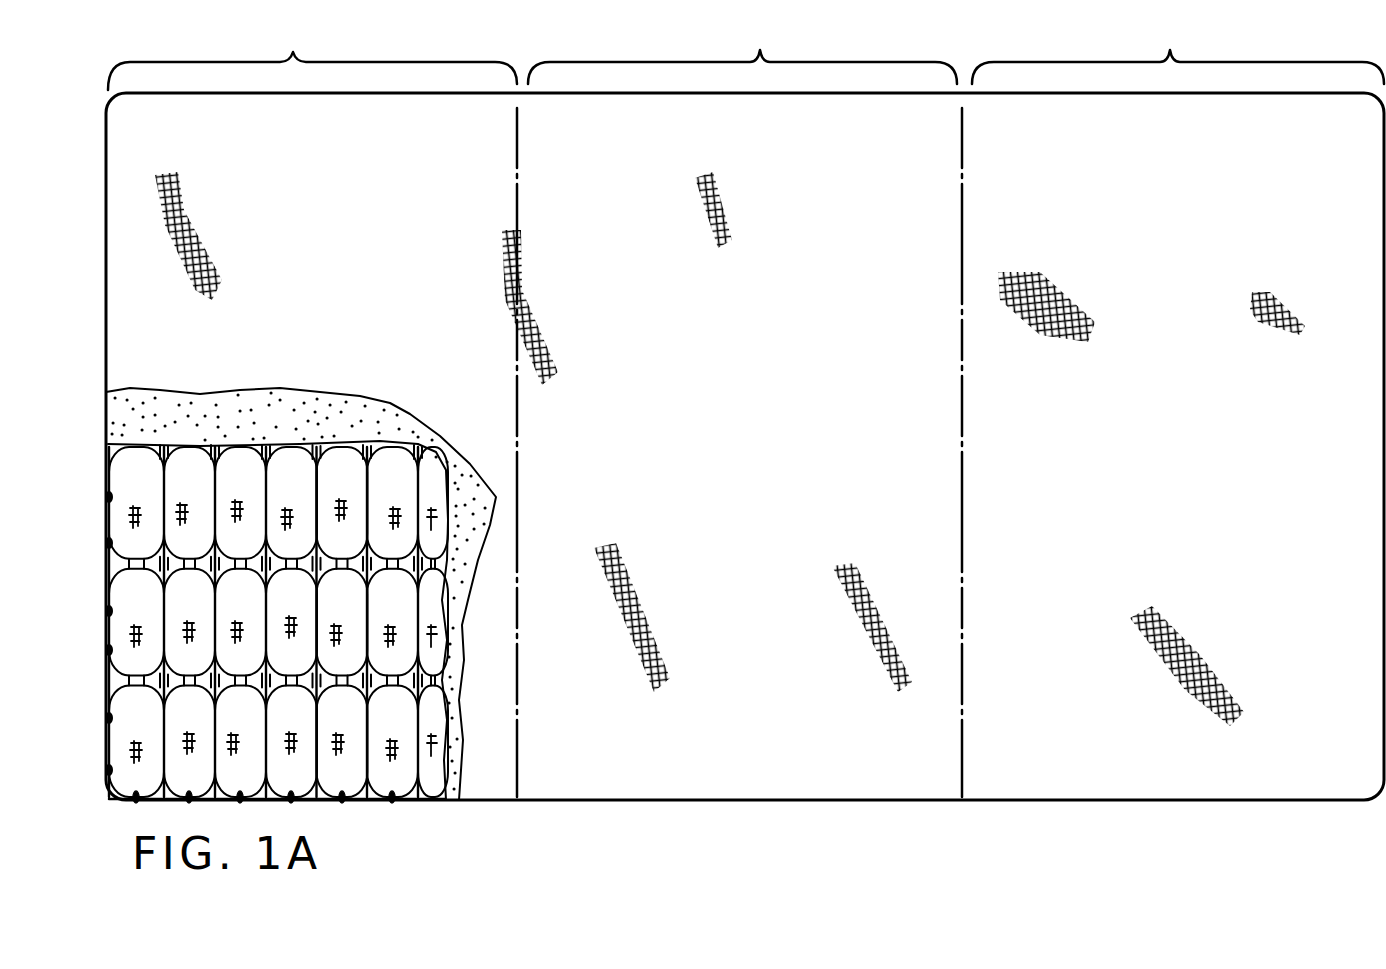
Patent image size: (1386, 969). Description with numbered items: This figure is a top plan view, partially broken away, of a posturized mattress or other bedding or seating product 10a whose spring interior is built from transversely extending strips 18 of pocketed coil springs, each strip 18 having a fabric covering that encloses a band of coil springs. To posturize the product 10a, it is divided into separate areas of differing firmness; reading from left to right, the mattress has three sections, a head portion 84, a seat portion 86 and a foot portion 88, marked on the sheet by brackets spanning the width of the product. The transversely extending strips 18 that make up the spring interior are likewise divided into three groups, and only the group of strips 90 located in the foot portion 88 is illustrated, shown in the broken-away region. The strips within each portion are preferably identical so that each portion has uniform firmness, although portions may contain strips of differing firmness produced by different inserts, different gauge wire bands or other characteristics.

The bedding or seating product 10a is at (548, 820).
The strip of pocketed coil springs 18 is at (187, 778).
The head portion 84 is at (1178, 47).
The seat portion 86 is at (742, 51).
The foot portion 88 is at (312, 49).
The group of strips 90 is at (357, 806).